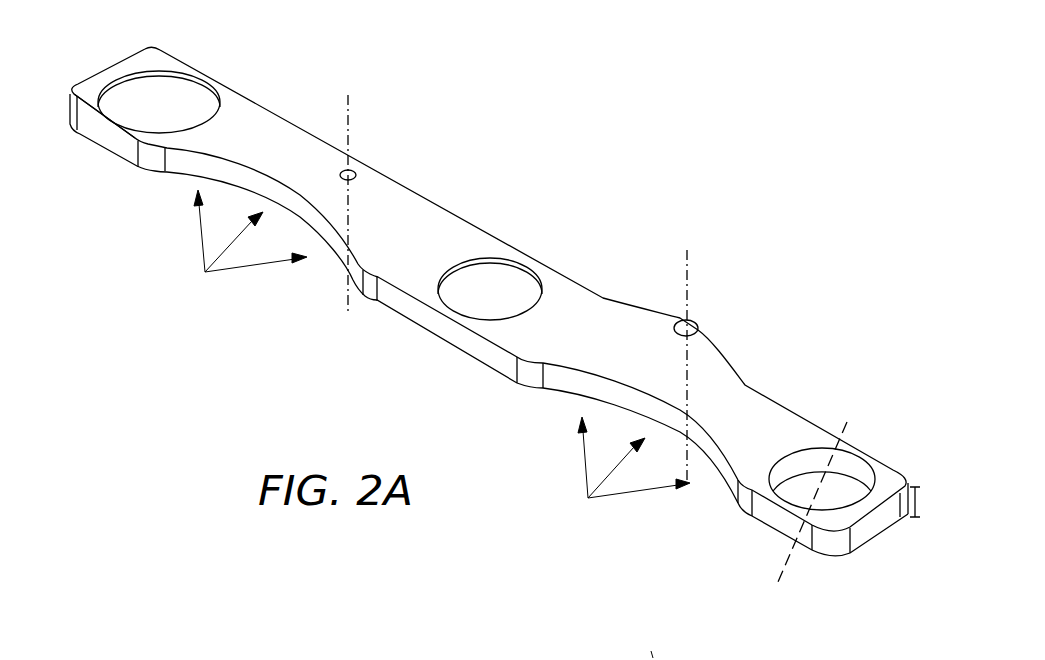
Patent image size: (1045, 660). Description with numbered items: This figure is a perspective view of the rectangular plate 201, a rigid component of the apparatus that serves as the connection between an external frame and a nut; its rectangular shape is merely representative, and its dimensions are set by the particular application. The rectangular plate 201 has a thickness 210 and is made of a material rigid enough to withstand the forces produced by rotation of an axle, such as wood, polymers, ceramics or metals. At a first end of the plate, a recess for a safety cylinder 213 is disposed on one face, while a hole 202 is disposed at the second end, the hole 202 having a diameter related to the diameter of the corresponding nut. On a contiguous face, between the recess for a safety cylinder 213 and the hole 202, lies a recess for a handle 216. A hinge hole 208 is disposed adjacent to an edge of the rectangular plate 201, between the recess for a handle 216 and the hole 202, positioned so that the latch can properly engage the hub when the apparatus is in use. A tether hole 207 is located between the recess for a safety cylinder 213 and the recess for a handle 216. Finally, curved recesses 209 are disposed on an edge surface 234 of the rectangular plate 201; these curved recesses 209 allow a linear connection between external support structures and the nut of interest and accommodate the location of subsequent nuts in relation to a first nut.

The rectangular plate 201 is at (538, 327).
The hole 202 is at (833, 481).
The tether hole 207 is at (353, 170).
The hinge hole 208 is at (695, 325).
The curved recesses 209 is at (205, 272).
The thickness 210 is at (922, 501).
The recess for a safety cylinder 213 is at (137, 92).
The recess for a handle 216 is at (500, 280).
The edge surface 234 is at (135, 172).